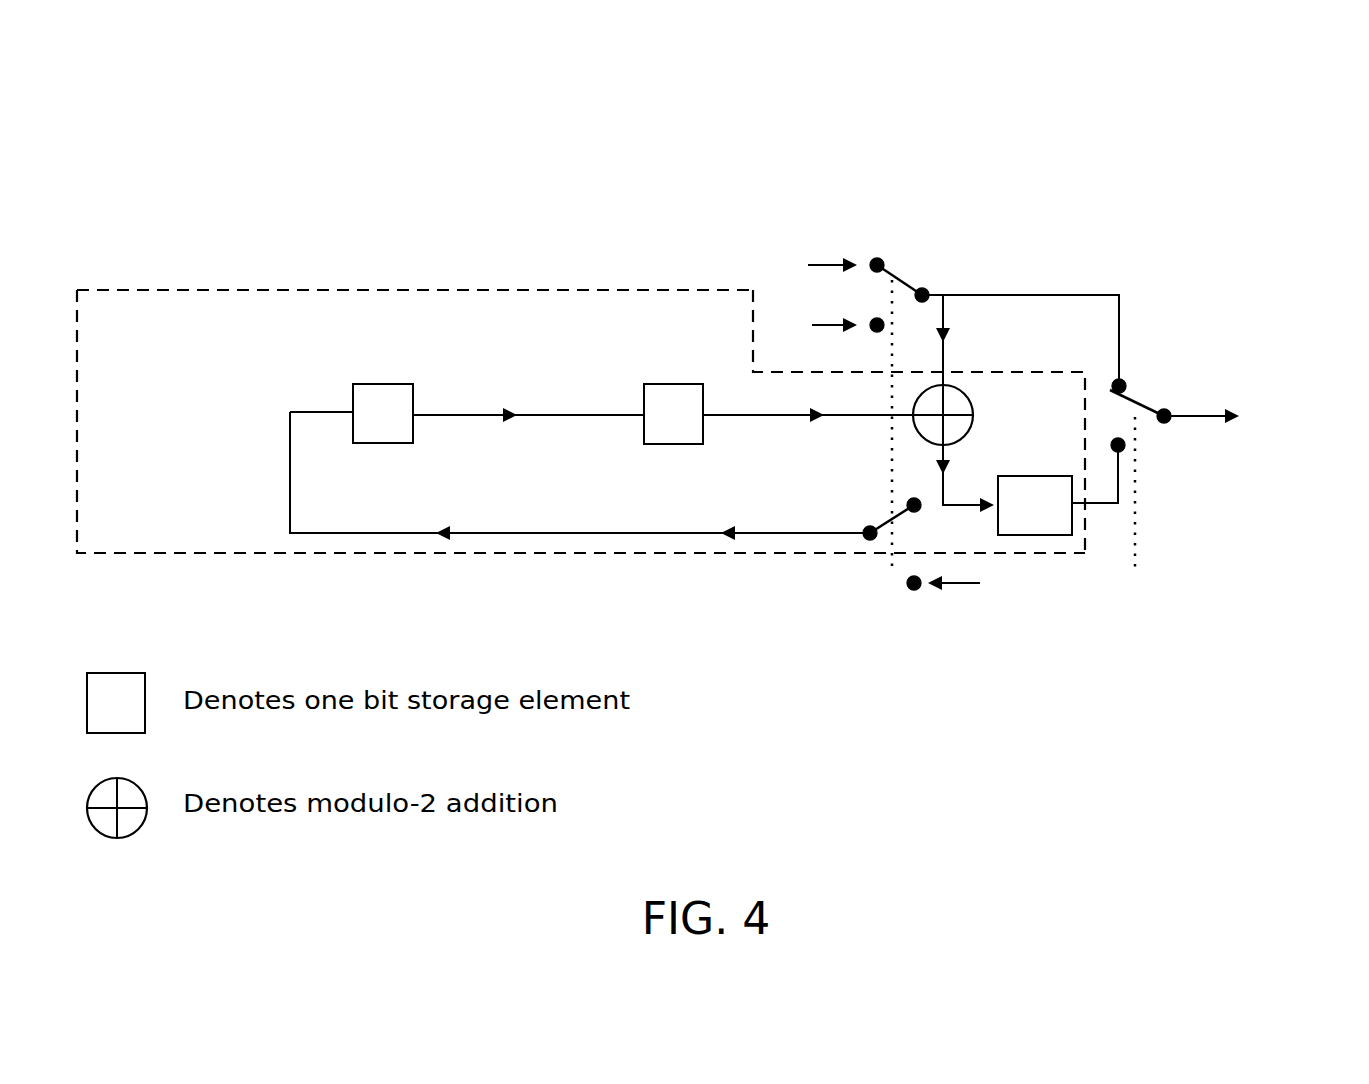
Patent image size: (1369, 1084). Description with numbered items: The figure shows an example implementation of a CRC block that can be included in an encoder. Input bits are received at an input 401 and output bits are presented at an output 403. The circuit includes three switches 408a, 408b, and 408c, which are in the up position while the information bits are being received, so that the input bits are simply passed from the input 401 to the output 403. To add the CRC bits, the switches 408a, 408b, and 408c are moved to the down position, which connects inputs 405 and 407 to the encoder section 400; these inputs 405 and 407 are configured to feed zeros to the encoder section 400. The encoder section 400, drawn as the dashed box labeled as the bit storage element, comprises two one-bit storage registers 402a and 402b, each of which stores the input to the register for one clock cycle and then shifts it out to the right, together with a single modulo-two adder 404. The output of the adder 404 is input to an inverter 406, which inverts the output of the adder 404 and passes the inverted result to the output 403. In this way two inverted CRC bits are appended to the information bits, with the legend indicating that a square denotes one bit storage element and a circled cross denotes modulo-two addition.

The encoder section 400 is at (233, 163).
The one-bit storage register 402a is at (385, 384).
The one-bit storage register 402b is at (673, 383).
The input 401 is at (801, 300).
The input 405 is at (820, 360).
The modulo-2 adder 404 is at (967, 397).
The switch 408a is at (893, 287).
The switch 408b is at (1135, 405).
The switch 408c is at (917, 518).
The output 403 is at (1254, 417).
The inverter 406 is at (1028, 537).
The input 407 is at (1022, 644).